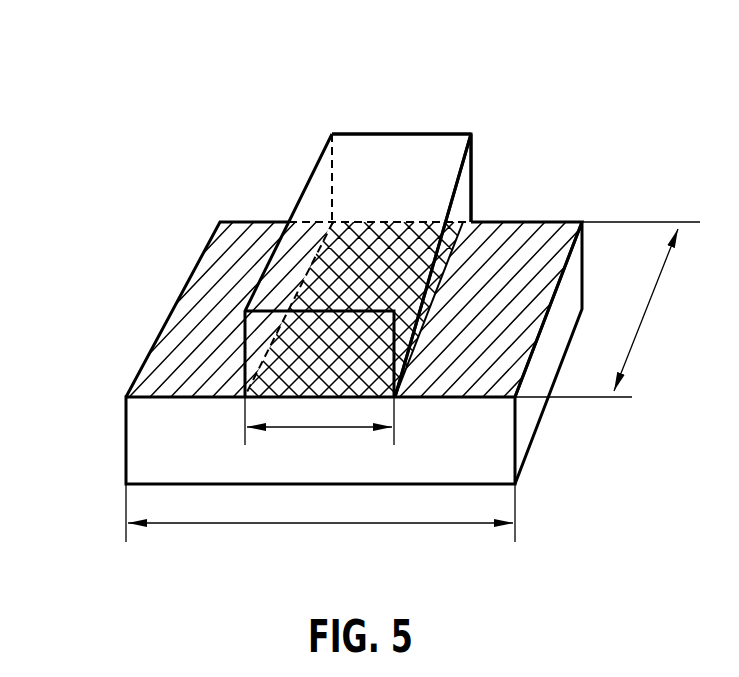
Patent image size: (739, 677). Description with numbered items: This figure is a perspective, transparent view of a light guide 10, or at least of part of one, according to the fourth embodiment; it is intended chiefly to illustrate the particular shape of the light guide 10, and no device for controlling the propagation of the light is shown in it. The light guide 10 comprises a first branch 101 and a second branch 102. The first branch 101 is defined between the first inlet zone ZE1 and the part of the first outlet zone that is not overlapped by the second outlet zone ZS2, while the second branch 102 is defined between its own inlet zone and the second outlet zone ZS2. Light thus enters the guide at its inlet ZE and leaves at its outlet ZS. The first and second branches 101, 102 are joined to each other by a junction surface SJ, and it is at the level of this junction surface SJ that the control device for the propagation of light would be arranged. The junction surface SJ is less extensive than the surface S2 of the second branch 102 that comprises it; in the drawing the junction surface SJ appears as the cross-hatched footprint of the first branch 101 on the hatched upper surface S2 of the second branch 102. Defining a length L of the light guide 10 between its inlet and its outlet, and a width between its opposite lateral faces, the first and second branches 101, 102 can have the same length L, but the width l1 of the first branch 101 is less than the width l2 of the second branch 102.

The light guide 10 is at (353, 321).
The substrate zone / base body ZS is at (353, 390).
The second outlet zone ZS2 is at (145, 452).
The surface of the second branch S2 is at (555, 247).
The second branch 102 is at (543, 360).
The emitter zone / prism element ZE is at (391, 212).
The first inlet zone ZE1 is at (365, 168).
The first branch 101 is at (465, 175).
The junction surface SJ is at (448, 262).
The length of the light guide L is at (607, 309).
The width of the first branch l1 is at (319, 430).
The width of the second branch l2 is at (320, 521).